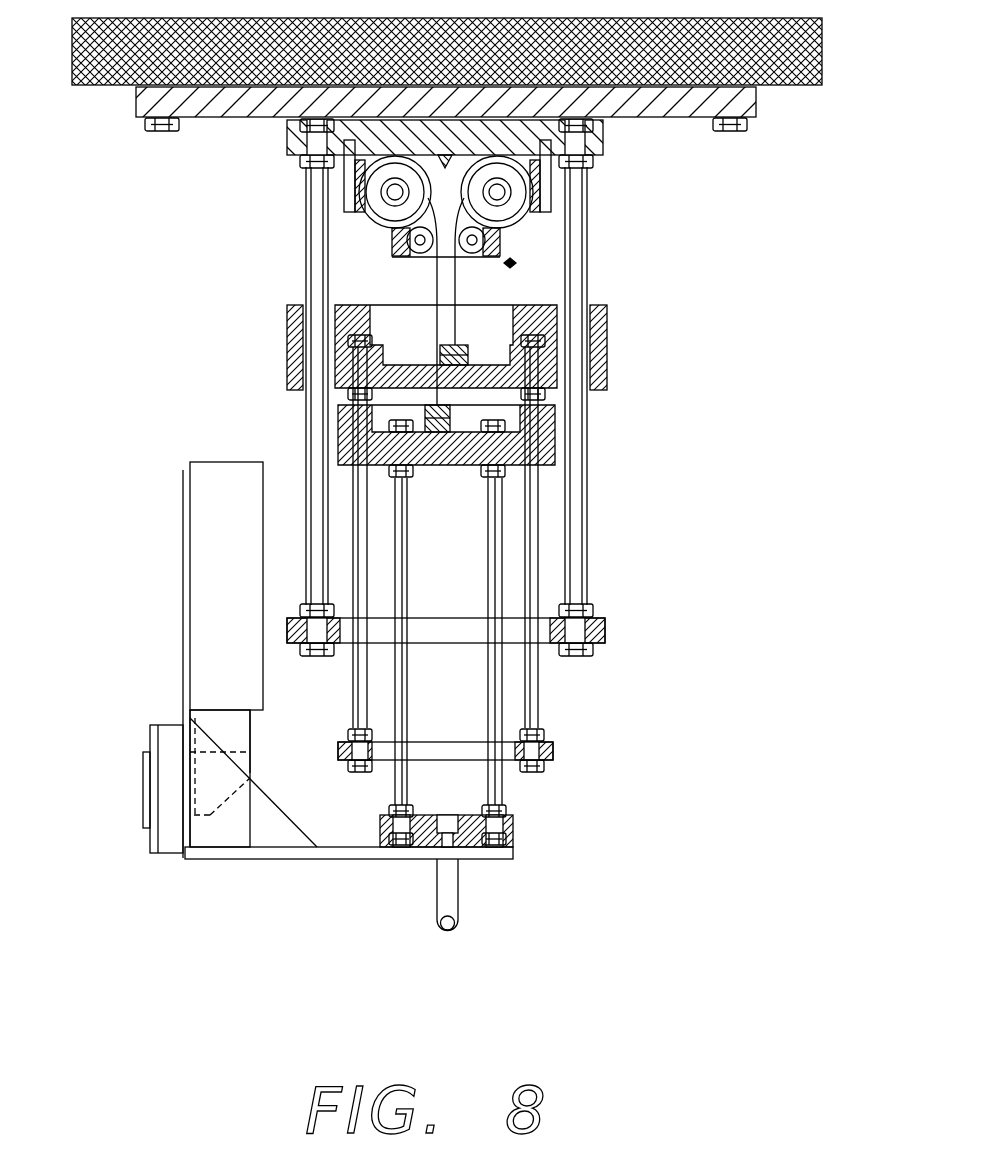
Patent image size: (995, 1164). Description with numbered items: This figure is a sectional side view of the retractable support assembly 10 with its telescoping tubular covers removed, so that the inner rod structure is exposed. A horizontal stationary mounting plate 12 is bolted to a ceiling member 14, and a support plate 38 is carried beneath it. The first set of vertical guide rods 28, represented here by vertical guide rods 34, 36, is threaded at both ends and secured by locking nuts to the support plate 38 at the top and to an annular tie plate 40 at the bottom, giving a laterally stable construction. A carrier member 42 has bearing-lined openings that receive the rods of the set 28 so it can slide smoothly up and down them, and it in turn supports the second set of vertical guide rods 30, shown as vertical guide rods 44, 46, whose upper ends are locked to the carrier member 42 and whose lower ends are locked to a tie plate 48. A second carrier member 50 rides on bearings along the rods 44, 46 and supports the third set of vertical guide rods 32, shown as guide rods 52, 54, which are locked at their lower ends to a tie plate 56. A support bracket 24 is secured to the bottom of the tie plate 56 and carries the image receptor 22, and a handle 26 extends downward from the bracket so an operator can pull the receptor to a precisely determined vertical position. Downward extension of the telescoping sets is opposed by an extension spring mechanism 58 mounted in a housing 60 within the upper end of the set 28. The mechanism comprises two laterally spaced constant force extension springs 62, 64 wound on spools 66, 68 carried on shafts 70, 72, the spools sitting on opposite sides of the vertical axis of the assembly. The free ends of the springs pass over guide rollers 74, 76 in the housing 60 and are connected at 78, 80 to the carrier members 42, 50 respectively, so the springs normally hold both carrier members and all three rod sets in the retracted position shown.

The retractable support assembly 10 is at (722, 489).
The mounting plate 12 is at (757, 101).
The ceiling member 14 is at (826, 50).
The image receptor 22 is at (175, 576).
The support bracket 24 is at (288, 859).
The handle 26 is at (478, 923).
The first set of vertical guide rods 28 is at (598, 456).
The second set of vertical guide rods 30 is at (548, 579).
The third set of vertical guide rods 32 is at (513, 710).
The vertical guide rod 34 is at (590, 493).
The vertical guide rod 36 is at (310, 262).
The support plate 38 is at (603, 136).
The tie plate 40 is at (605, 633).
The carrier member 42 is at (479, 352).
The vertical guide rod 44 is at (540, 530).
The vertical guide rod 46 is at (356, 718).
The tie plate 48 is at (553, 752).
The carrier member 50 is at (426, 431).
The guide rod 52 is at (488, 695).
The guide rod 54 is at (408, 700).
The tie plate 56 is at (513, 840).
The extension spring mechanism 58 is at (513, 240).
The housing 60 is at (560, 200).
The constant force extension spring 62 is at (561, 235).
The constant force extension spring 64 is at (333, 233).
The spool 66 is at (540, 205).
The spool 68 is at (372, 199).
The shaft 70 is at (499, 197).
The shaft 72 is at (393, 200).
The guide roller 74 is at (474, 257).
The guide roller 76 is at (410, 257).
The connection 78 is at (463, 345).
The connection 80 is at (425, 405).